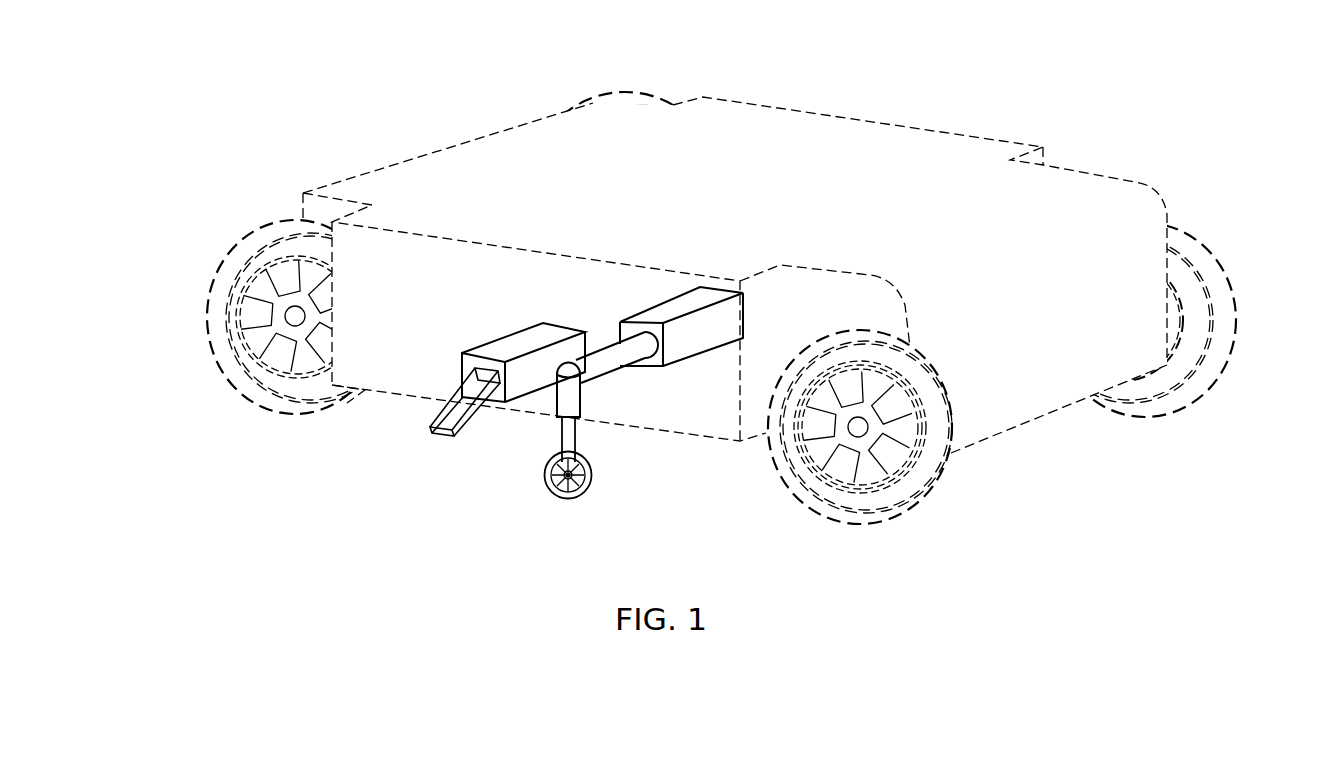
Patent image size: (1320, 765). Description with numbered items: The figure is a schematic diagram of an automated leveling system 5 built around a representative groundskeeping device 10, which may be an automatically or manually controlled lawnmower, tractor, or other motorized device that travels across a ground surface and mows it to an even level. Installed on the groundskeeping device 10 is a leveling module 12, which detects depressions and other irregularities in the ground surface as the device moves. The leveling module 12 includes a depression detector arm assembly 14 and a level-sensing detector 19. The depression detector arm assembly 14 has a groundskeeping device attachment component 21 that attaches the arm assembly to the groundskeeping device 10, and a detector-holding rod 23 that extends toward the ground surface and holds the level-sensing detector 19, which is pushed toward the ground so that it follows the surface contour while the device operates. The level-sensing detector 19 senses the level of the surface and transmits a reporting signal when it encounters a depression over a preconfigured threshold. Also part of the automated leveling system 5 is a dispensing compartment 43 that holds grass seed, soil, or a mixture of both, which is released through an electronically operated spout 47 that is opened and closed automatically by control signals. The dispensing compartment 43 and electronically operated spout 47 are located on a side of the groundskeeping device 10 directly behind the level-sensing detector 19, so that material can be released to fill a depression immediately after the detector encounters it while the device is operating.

The automated leveling system 5 is at (290, 122).
The groundskeeping device 10 is at (468, 123).
The leveling module 12 is at (613, 336).
The depression detector arm assembly 14 is at (552, 408).
The level-sensing detector 19 is at (567, 497).
The groundskeeping device attachment component 21 is at (756, 312).
The detector-holding rod 23 is at (577, 398).
The dispensing compartment 43 is at (506, 336).
The electronically operated spout 47 is at (432, 440).